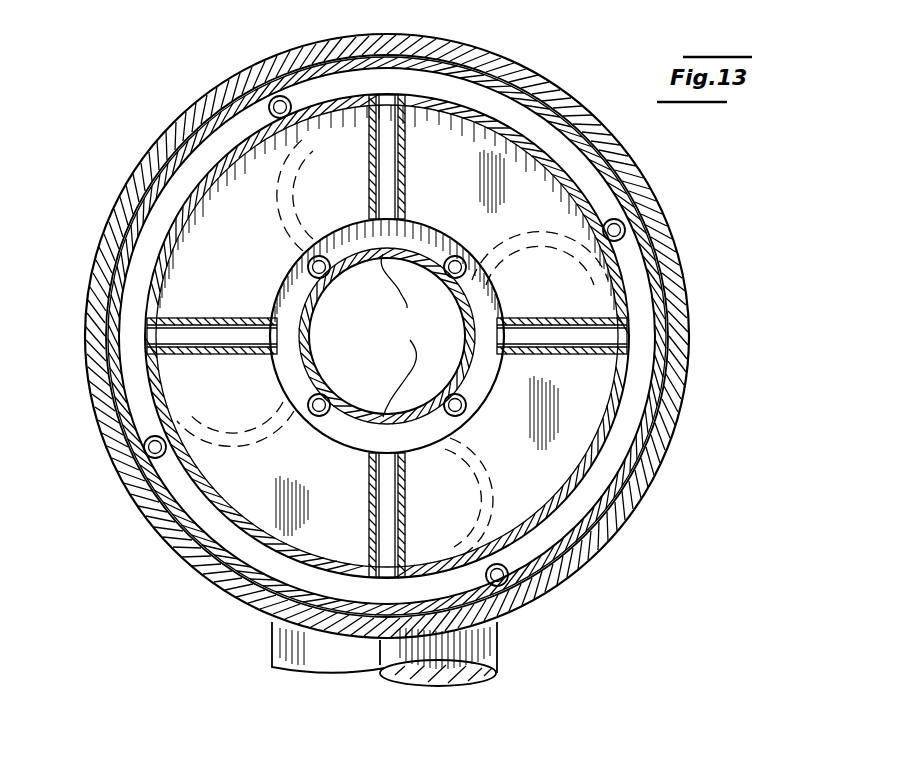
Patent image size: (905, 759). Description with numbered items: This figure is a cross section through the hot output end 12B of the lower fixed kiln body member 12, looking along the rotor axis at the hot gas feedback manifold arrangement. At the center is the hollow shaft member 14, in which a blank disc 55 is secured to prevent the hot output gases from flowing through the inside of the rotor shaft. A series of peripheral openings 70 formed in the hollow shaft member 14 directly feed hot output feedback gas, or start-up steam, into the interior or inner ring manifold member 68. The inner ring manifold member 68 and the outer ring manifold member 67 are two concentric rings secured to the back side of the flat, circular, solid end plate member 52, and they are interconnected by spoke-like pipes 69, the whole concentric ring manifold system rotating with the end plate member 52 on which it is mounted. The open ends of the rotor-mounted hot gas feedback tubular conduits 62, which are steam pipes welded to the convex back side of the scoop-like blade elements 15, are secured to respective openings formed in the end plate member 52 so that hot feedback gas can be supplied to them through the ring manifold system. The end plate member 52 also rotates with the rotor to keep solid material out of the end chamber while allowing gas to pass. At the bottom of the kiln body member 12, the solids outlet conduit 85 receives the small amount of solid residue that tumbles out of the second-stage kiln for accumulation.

The kiln body member 12 is at (199, 94).
The output end 12B is at (523, 70).
The hollow shaft member 14 is at (458, 378).
The scoop-like blade elements 15 is at (300, 138).
The end plate member 52 is at (262, 220).
The blank disc 55 is at (372, 371).
The hot gas feedback tubular conduits 62 is at (281, 96).
The outer ring manifold member 67 is at (573, 191).
The inner ring manifold member 68 is at (276, 292).
The spoke-like pipes 69 is at (399, 147).
The peripheral openings 70 is at (462, 337).
The solids outlet conduit 85 is at (490, 638).